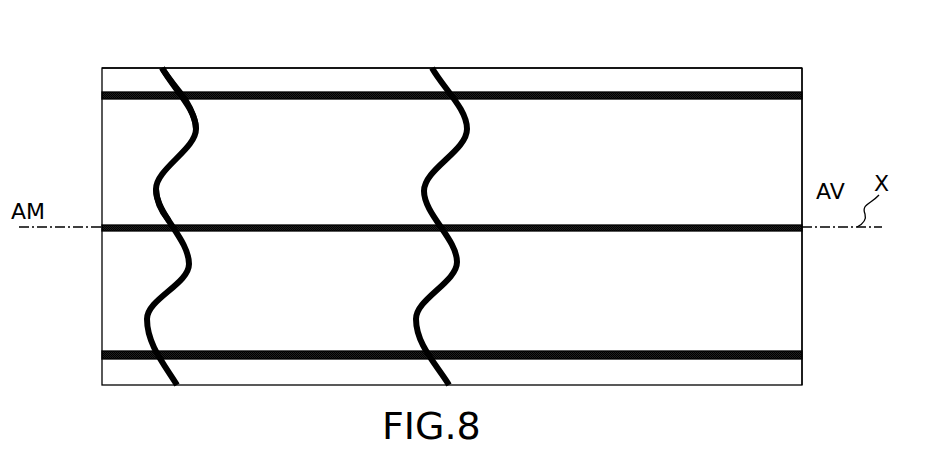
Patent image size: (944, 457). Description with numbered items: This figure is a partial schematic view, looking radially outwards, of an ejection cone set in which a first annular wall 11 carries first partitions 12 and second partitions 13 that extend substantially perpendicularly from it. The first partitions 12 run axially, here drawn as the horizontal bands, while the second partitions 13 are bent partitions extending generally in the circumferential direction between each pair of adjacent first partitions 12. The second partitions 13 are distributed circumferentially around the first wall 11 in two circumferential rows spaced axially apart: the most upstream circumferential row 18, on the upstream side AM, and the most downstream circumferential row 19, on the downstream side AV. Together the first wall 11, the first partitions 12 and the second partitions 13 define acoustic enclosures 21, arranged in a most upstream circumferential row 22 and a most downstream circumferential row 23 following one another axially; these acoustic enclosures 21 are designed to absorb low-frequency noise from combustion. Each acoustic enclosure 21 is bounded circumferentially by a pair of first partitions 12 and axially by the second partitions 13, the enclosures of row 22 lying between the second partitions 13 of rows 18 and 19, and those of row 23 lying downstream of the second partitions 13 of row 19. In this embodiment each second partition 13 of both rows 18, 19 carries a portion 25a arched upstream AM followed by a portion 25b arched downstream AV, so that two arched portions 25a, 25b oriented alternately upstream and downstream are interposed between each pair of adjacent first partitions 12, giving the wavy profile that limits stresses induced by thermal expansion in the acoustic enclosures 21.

The first annular wall 11 is at (200, 335).
The first partitions 12 is at (283, 90).
The second partitions 13 is at (165, 161).
The most upstream circumferential row 18 is at (154, 62).
The most downstream circumferential row 19 is at (423, 64).
The acoustic enclosures 21 is at (305, 172).
The most upstream circumferential row of acoustic enclosures 22 is at (330, 60).
The most downstream circumferential row of acoustic enclosures 23 is at (612, 60).
The portion arched upstream 25a is at (156, 190).
The portion arched downstream 25b is at (192, 128).